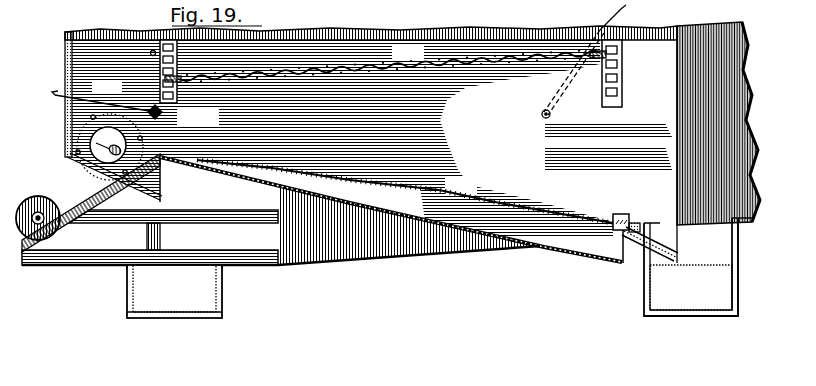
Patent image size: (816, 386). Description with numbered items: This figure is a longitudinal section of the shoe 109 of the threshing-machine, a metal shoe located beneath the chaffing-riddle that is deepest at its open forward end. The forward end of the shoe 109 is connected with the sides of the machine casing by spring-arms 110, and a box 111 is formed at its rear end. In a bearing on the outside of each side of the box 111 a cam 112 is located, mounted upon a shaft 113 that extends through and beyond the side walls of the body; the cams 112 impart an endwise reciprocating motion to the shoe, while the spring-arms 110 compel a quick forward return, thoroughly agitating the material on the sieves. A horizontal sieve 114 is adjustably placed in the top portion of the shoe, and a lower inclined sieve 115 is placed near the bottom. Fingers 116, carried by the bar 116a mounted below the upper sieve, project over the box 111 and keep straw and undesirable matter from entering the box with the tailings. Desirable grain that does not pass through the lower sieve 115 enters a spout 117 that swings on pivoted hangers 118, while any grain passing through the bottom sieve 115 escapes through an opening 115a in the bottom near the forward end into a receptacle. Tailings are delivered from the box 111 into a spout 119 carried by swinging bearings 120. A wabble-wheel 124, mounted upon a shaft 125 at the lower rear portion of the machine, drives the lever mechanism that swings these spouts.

The shoe 109 is at (371, 138).
The spring-arms 110 is at (620, 9).
The box 111 is at (65, 113).
The cam 112 is at (66, 133).
The shaft 113 is at (66, 153).
The horizontal sieve 114 is at (415, 63).
The lower inclined sieve 115 is at (405, 191).
The opening 115a is at (616, 246).
The fingers 116 is at (107, 95).
The bar 116a is at (182, 115).
The spout 117 is at (691, 267).
The pivoted hangers 118 is at (738, 305).
The spout 119 is at (174, 291).
The swinging bearings 120 is at (174, 324).
The wabble-wheel 124 is at (40, 197).
The shaft 125 is at (60, 233).